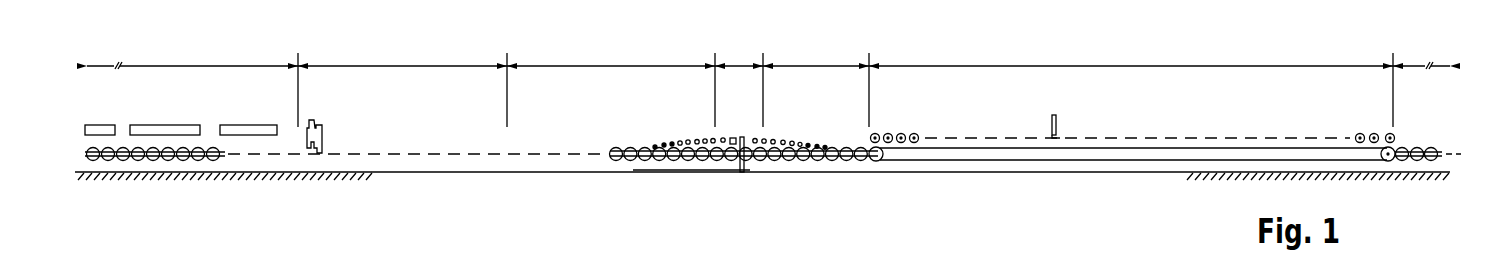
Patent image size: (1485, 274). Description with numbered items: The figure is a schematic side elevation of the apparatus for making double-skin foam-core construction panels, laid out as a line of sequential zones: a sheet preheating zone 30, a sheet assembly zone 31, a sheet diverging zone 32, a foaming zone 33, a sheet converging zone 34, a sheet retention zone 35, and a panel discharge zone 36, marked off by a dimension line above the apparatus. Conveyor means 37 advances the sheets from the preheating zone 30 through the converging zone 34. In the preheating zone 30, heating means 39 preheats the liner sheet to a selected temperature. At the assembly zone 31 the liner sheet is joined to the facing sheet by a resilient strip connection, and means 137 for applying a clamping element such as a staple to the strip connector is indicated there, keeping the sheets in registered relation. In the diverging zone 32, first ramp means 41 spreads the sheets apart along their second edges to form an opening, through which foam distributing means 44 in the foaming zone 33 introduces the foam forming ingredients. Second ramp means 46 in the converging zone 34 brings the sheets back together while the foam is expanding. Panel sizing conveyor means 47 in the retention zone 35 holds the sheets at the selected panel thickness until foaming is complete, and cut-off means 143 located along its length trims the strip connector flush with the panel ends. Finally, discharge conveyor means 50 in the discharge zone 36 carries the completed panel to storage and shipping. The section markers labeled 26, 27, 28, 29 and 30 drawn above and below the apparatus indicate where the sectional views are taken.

The section line 26 is at (410, 112).
The section line 27 is at (700, 112).
The section line 28 is at (755, 112).
The section line 29 is at (855, 112).
The sheet preheating zone 30 is at (167, 66).
The sheet assembly zone 31 is at (378, 66).
The sheet diverging zone 32 is at (596, 66).
The foaming zone 33 is at (722, 66).
The sheet converging zone 34 is at (795, 66).
The sheet retention zone 35 is at (1096, 66).
The panel discharge zone 36 is at (1405, 66).
The conveyor means 37 is at (158, 161).
The heating means 39 is at (235, 125).
The first ramp means 41 is at (697, 137).
The foam distributing means 44 is at (740, 136).
The second ramp means 46 is at (812, 142).
The panel sizing conveyor means 47 is at (1210, 133).
The discharge conveyor means 50 is at (1403, 147).
The means for applying a clamping element 137 is at (310, 116).
The cut-off means 143 is at (1056, 116).